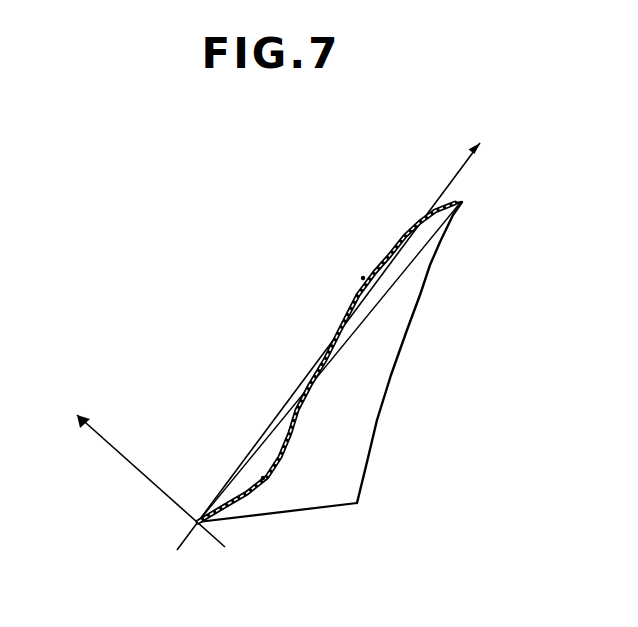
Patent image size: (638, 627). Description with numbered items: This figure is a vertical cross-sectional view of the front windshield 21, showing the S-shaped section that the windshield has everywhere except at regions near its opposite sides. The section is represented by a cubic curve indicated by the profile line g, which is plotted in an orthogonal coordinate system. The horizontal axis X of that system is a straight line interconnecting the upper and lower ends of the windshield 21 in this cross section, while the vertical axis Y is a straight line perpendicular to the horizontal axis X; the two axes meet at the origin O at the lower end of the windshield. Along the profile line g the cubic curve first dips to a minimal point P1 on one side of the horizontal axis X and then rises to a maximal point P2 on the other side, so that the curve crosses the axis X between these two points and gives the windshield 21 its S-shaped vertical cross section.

The front windshield 21 is at (408, 227).
The profile line g is at (295, 422).
The minimal point P1 is at (263, 478).
The maximal point P2 is at (363, 278).
The origin of coordinate system O is at (200, 556).
The horizontal axis X is at (348, 336).
The vertical axis Y is at (134, 474).